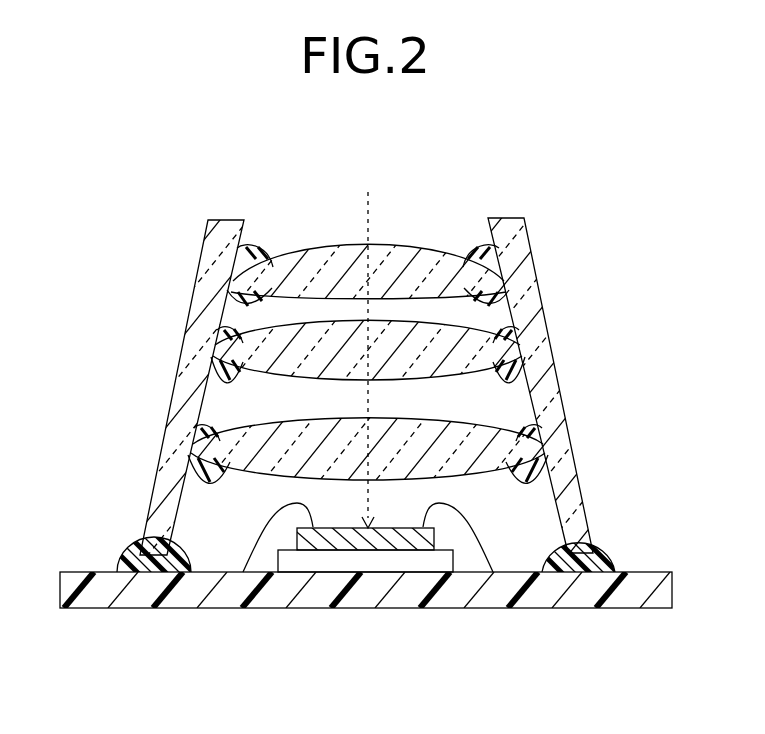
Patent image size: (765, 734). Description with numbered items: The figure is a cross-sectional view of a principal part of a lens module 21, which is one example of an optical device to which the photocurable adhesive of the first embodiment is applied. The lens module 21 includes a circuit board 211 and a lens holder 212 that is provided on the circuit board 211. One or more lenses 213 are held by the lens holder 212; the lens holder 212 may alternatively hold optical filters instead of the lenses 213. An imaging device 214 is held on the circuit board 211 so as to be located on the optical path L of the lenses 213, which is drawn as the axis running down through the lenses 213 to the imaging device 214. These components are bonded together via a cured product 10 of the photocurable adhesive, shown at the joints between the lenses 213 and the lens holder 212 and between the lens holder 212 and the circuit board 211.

The lens module 21 is at (382, 398).
The lens holder 212 is at (187, 387).
The lenses 213 is at (441, 272).
The cured product 10 is at (243, 293).
The circuit board 211 is at (365, 597).
The imaging device 214 is at (414, 537).
The optical path L is at (363, 222).